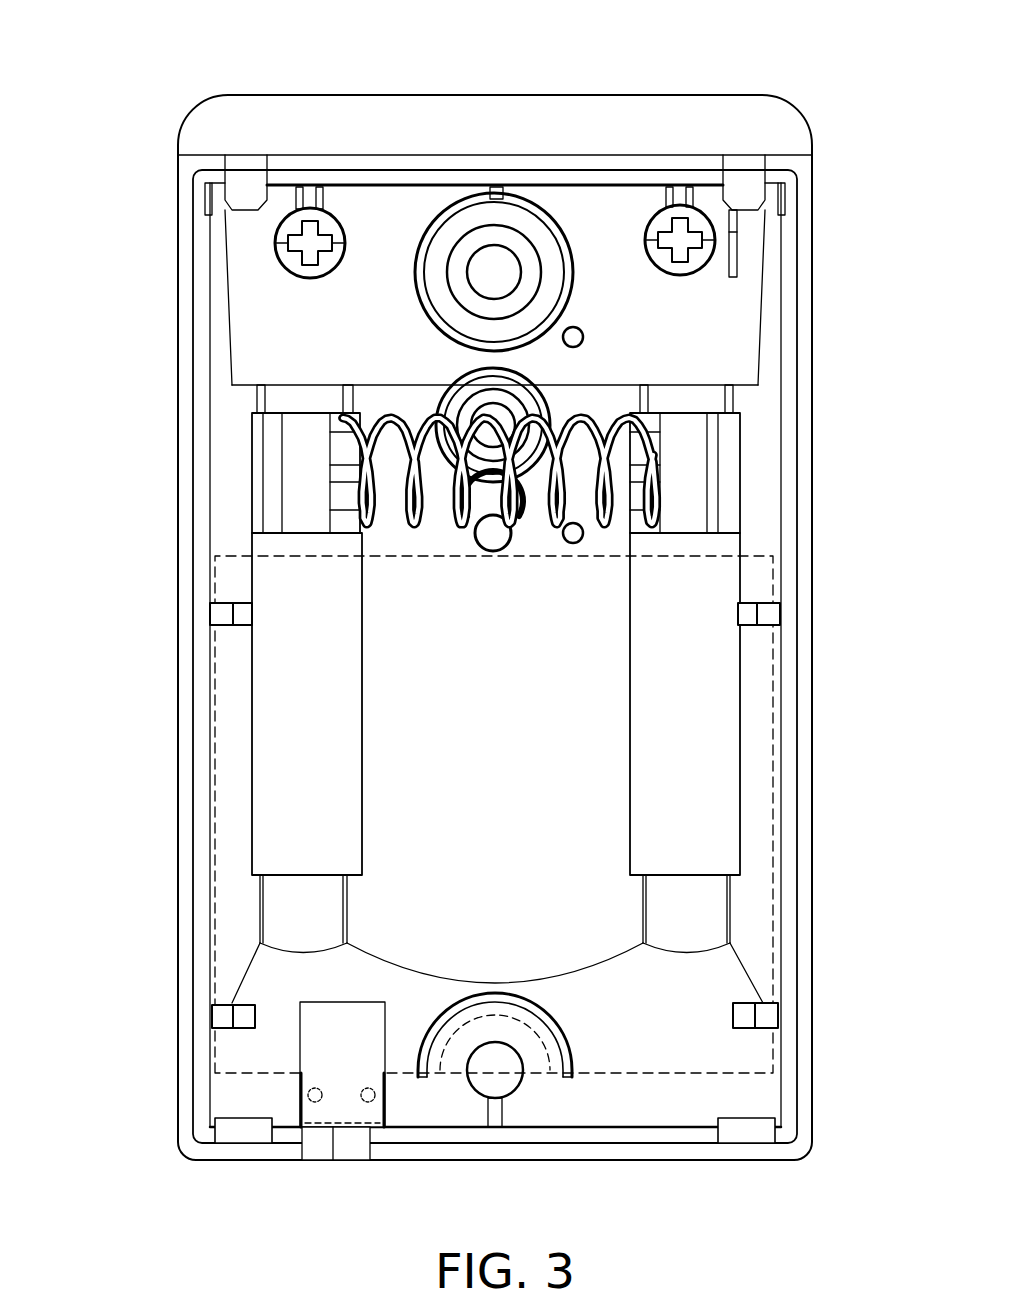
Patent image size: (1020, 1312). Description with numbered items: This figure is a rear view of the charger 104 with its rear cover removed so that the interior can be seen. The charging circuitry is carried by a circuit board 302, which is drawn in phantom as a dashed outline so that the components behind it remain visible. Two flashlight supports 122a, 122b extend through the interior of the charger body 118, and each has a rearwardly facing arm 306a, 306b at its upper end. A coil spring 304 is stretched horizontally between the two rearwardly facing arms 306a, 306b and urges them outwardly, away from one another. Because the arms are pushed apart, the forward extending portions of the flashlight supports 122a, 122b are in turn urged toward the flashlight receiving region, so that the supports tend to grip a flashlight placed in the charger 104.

The charger 104 is at (551, 580).
The charger body 118 is at (177, 668).
The flashlight support 122a is at (340, 708).
The flashlight support 122b is at (710, 708).
The circuit board 302 is at (215, 742).
The coil spring 304 is at (392, 420).
The rearwardly facing arm 306a is at (290, 480).
The rearwardly facing arm 306b is at (690, 480).